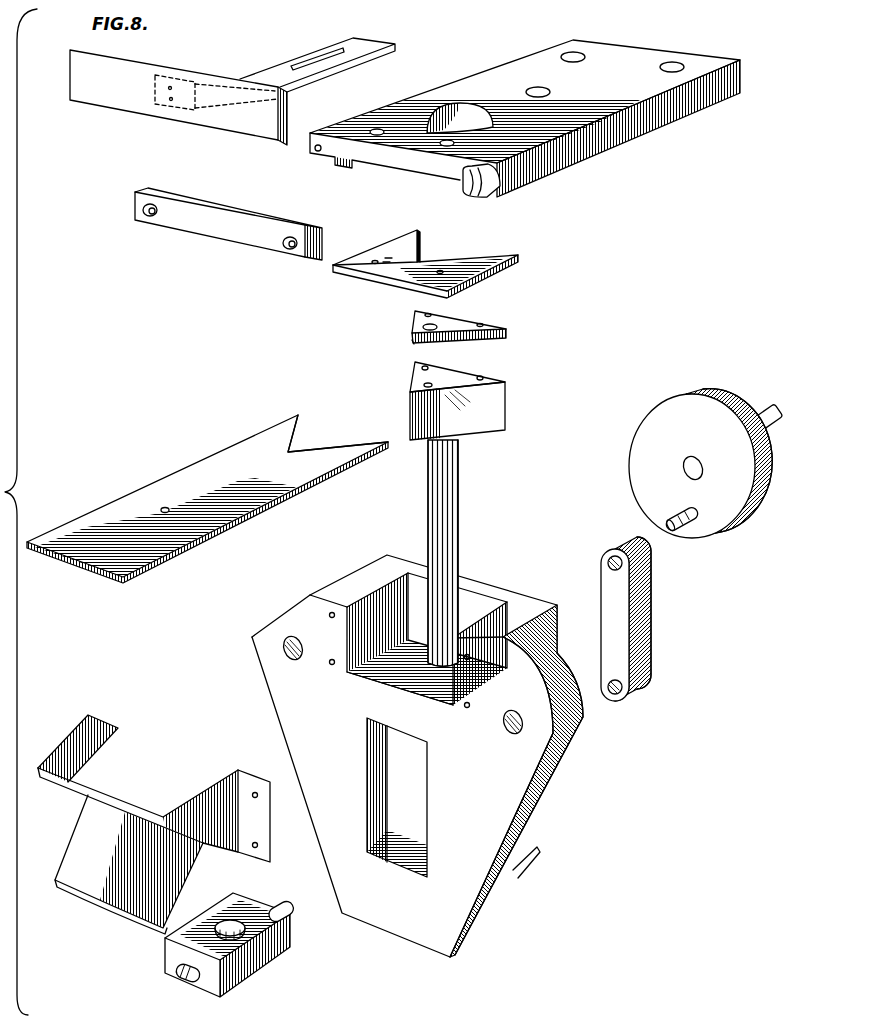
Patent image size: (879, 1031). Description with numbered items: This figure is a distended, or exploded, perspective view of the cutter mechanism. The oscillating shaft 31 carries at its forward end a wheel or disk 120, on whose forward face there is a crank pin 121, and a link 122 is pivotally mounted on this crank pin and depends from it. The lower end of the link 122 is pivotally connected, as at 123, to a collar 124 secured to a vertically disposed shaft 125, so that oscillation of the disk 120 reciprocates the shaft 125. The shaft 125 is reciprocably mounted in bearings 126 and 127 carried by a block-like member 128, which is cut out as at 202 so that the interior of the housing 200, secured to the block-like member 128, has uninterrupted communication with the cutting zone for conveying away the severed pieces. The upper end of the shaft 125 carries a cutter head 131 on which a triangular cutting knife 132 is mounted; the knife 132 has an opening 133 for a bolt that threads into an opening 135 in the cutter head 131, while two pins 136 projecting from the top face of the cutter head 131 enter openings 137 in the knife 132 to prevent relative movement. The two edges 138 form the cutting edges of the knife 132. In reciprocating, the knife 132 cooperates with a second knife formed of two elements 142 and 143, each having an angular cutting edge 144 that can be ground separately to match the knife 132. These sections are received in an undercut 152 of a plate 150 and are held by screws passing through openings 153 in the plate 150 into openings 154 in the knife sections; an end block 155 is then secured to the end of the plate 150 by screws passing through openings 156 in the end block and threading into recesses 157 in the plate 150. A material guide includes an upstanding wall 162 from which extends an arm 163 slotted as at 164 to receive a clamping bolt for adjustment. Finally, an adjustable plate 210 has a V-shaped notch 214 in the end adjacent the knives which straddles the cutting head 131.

The upstanding wall 162 is at (232, 87).
The arm 163 is at (309, 61).
The slot 164 is at (267, 72).
The plate 150 is at (505, 109).
The openings 153 is at (376, 129).
The recesses 157 is at (315, 155).
The undercut 152 is at (348, 162).
The end block 155 is at (222, 223).
The openings 156 is at (150, 222).
The knife element 142 is at (383, 247).
The knife element 143 is at (436, 255).
The angular cutting edge 144 is at (408, 263).
The openings 154 is at (441, 270).
The cutting knife 132 is at (460, 322).
The opening 133 is at (432, 326).
The openings 137 is at (425, 315).
The cutting edges 138 is at (415, 342).
The cutter head 131 is at (469, 395).
The opening 135 is at (426, 384).
The pins 136 is at (470, 360).
The shaft 125 is at (460, 497).
The plate 210 is at (207, 498).
The V-shaped notch 214 is at (310, 447).
The cut-out 202 is at (426, 756).
The bearing 127 is at (400, 688).
The block-like member 128 is at (507, 780).
The bearing 126 is at (413, 847).
The shaft 31 is at (762, 408).
The wheel or disk 120 is at (678, 478).
The crank pin 121 is at (683, 526).
The link 122 is at (643, 618).
The housing 200 is at (220, 852).
The pivotal connection 123 is at (279, 905).
The collar 124 is at (240, 933).